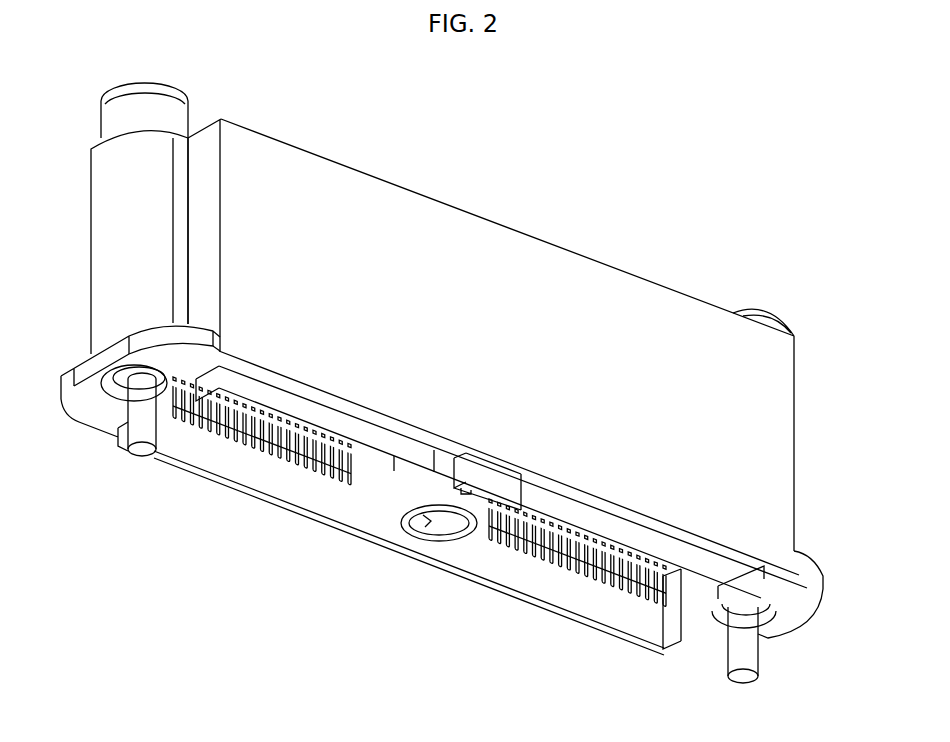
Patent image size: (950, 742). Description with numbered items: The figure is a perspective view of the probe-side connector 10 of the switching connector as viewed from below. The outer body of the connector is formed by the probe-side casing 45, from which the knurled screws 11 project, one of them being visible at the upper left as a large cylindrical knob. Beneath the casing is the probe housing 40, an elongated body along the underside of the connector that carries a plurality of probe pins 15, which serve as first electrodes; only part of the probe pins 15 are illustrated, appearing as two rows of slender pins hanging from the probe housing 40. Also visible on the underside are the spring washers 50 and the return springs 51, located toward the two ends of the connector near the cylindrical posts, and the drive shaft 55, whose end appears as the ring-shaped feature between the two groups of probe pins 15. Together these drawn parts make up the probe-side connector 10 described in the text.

The probe-side connector 10 is at (438, 371).
The knurled screws 11 is at (178, 94).
The probe pins 15 is at (324, 480).
The probe housing 40 is at (373, 473).
The probe-side casing 45 is at (552, 249).
The spring washers 50 is at (100, 394).
The return springs 51 is at (717, 592).
The drive shaft 55 is at (431, 556).